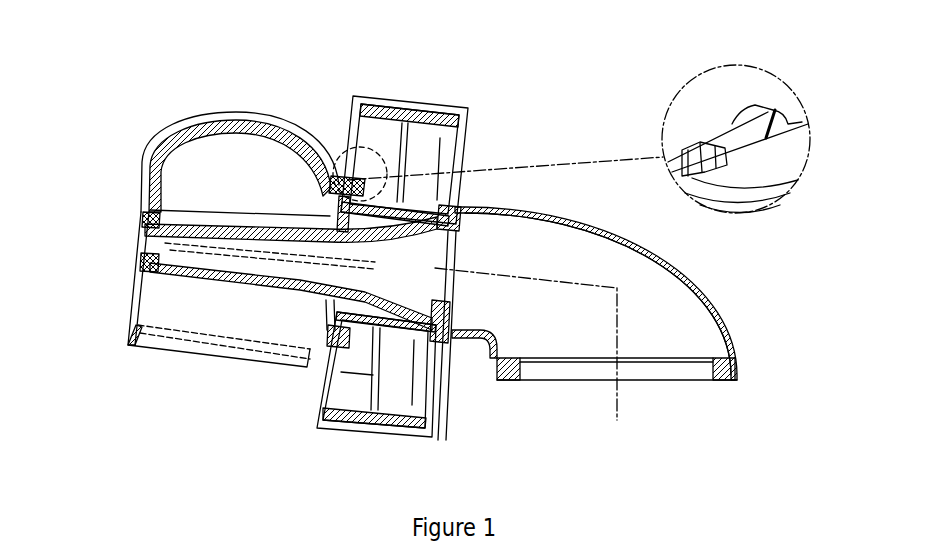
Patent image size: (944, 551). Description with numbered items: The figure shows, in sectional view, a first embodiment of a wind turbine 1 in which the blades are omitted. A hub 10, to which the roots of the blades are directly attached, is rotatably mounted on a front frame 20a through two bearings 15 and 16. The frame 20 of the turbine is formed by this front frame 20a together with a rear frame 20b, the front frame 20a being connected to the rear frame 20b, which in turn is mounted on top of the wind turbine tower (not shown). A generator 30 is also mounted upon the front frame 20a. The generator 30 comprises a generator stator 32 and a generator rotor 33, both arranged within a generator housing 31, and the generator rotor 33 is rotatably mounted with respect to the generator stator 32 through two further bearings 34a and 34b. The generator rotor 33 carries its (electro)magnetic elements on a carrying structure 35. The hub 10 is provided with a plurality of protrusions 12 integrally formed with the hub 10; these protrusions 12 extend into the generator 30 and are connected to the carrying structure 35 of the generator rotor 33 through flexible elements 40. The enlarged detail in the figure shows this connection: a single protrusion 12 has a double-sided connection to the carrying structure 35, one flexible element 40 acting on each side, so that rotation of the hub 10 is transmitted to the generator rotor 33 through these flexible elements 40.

The wind turbine 1 is at (172, 83).
The hub 10 is at (165, 297).
The protrusions 12 is at (348, 180).
The bearing 15 is at (150, 216).
The bearing 16 is at (292, 296).
The frame 20 is at (658, 243).
The front frame 20a is at (150, 260).
The rear frame 20b is at (705, 295).
The generator 30 is at (337, 96).
The generator housing 31 is at (436, 418).
The generator stator 32 is at (442, 380).
The generator rotor 33 is at (330, 370).
The bearing 34a is at (318, 328).
The bearing 34b is at (431, 220).
The carrying structure 35 is at (760, 106).
The flexible elements 40 is at (693, 142).